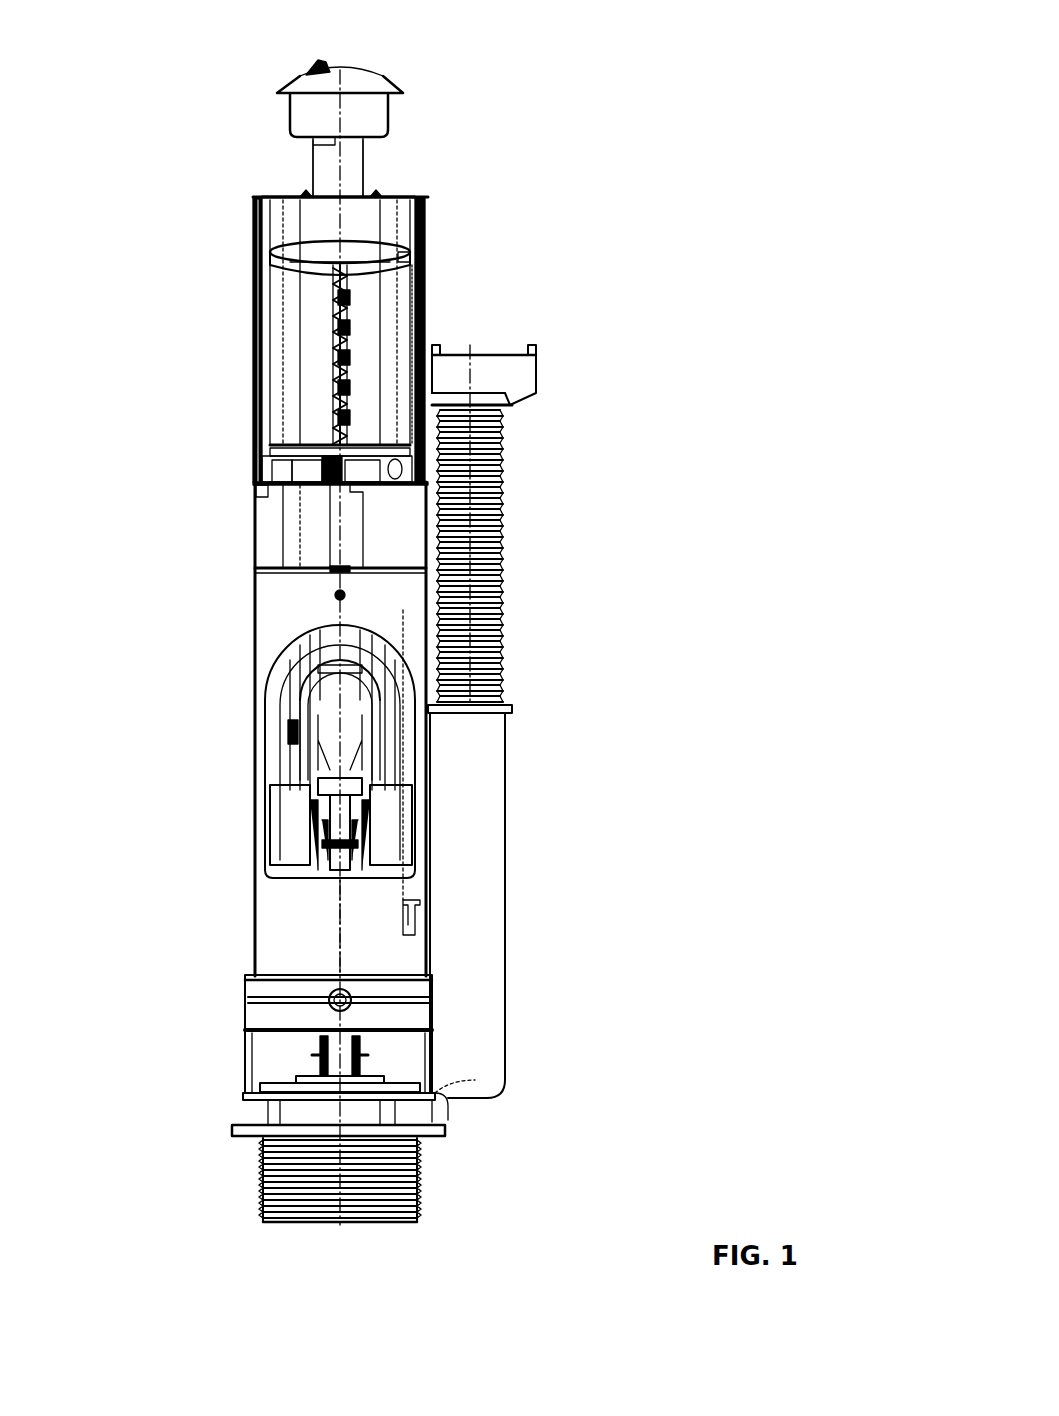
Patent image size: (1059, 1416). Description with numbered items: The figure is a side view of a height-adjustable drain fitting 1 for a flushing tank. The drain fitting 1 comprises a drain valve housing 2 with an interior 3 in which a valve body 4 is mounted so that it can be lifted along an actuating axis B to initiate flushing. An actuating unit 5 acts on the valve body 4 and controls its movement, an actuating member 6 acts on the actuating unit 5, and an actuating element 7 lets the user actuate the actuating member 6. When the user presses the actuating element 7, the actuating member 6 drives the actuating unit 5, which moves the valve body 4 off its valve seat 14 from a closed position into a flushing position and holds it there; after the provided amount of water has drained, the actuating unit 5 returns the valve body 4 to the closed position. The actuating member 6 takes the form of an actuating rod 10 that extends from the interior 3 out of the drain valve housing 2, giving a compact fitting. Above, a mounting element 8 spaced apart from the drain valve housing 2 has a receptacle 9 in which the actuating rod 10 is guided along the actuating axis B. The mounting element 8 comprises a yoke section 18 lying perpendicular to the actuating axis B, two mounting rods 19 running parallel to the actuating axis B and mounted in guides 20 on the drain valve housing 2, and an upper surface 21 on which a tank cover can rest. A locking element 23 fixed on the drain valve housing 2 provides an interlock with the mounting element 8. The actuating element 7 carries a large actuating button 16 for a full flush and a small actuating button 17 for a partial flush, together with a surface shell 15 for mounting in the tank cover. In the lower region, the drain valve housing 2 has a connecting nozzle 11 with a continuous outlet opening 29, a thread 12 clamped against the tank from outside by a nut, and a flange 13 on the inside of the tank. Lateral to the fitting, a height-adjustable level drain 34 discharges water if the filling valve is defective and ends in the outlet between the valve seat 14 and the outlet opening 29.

The drain fitting 1 is at (682, 100).
The drain valve housing 2 is at (255, 905).
The interior 3 is at (283, 738).
The valve body 4 is at (382, 1076).
The actuating unit 5 is at (290, 836).
The actuating member 6 is at (325, 378).
The actuating element 7 is at (290, 117).
The mounting element 8 is at (255, 218).
The receptacle 9 is at (372, 195).
The actuating rod 10 is at (352, 320).
The connecting nozzle 11 is at (265, 1192).
The thread 12 is at (420, 1195).
The flange 13 is at (445, 1138).
The valve seat 14 is at (432, 1100).
The surface shell 15 is at (405, 118).
The large actuating button 16 is at (345, 68).
The small actuating button 17 is at (312, 66).
The yoke section 18 is at (420, 240).
The mounting rods 19 is at (260, 380).
The guides 20 is at (258, 610).
The upper surface 21 is at (268, 196).
The locking element 23 is at (284, 460).
The outlet opening 29 is at (335, 1226).
The level drain 34 is at (476, 766).
The actuating axis B is at (340, 905).